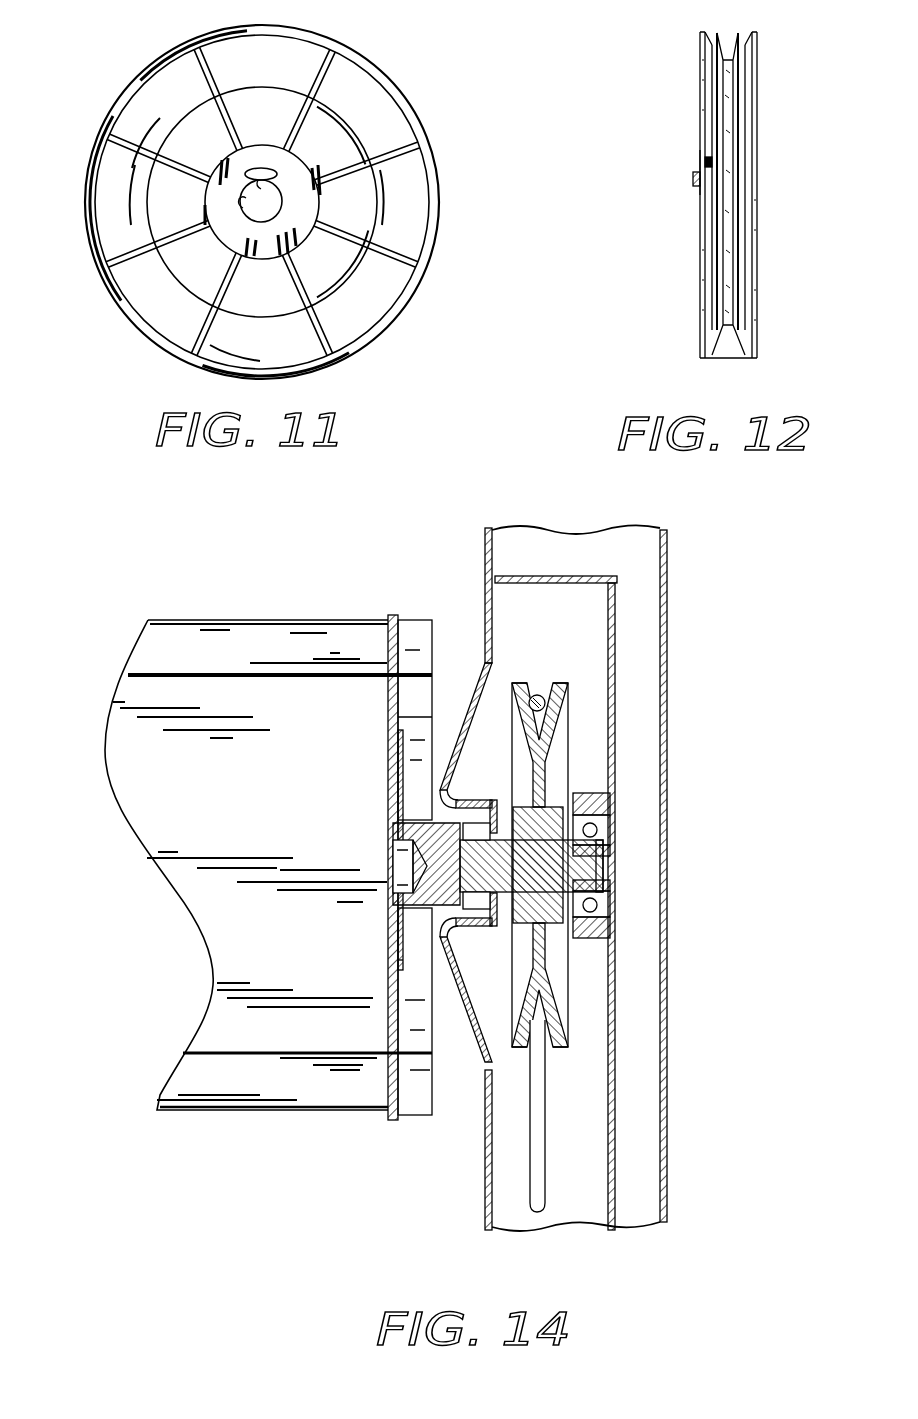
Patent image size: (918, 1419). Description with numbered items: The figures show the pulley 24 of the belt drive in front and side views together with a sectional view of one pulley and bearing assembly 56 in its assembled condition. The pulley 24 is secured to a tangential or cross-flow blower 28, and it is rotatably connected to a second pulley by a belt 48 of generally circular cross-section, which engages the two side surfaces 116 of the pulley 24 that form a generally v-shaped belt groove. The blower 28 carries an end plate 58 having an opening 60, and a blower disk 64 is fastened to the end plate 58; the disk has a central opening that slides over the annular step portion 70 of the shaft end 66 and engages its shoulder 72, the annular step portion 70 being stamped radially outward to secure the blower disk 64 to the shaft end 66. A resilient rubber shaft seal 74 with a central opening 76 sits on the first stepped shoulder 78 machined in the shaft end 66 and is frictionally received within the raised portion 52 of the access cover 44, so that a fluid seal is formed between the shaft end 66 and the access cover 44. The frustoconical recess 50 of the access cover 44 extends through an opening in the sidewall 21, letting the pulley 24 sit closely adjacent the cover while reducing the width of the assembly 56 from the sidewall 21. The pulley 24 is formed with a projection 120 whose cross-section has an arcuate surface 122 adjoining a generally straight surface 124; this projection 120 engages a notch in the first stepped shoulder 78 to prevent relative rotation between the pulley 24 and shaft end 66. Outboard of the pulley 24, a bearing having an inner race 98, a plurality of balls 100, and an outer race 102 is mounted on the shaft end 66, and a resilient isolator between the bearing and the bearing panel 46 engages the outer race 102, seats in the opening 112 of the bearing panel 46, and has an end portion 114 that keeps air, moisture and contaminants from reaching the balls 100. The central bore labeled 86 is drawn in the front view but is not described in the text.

In FIG. 14, the sidewall 21 is at (485, 548).
In FIG. 11, the pulley 24 is at (376, 64).
In FIG. 12, the pulley 24 is at (705, 112).
In FIG. 14, the pulley 24 is at (568, 738).
In FIG. 14, the tangential blower 28 is at (262, 640).
In FIG. 14, the access cover 44 is at (560, 578).
In FIG. 14, the bearing panel 46 is at (615, 682).
In FIG. 14, the belt 48 is at (537, 694).
In FIG. 14, the frustoconical shaped recess 50 is at (480, 722).
In FIG. 14, the raised portion 52 is at (468, 800).
In FIG. 14, the pulley and bearing assembly 56 is at (606, 524).
In FIG. 14, the end plate 58 is at (388, 712).
In FIG. 14, the opening 60 is at (396, 775).
In FIG. 14, the blower disk 64 is at (404, 992).
In FIG. 14, the shaft end 66 is at (433, 864).
In FIG. 14, the annular step portion 70 is at (393, 848).
In FIG. 14, the shoulder 72 is at (435, 866).
In FIG. 14, the shaft seal 74 is at (485, 845).
In FIG. 14, the central opening 76 is at (491, 891).
In FIG. 14, the first stepped shoulder 78 is at (470, 928).
In FIG. 11, the central bore 86 is at (244, 207).
In FIG. 14, the inner race 98 is at (603, 848).
In FIG. 14, the balls 100 is at (598, 830).
In FIG. 14, the outer race 102 is at (612, 806).
In FIG. 14, the opening 112 is at (612, 928).
In FIG. 12, the end portion 114 is at (724, 48).
In FIG. 14, the end portion 114 is at (604, 870).
In FIG. 12, the side surfaces 116 is at (712, 28).
In FIG. 11, the projection 120 is at (272, 172).
In FIG. 12, the projection 120 is at (692, 180).
In FIG. 14, the projection 120 is at (531, 866).
In FIG. 11, the arcuate surface 122 is at (258, 170).
In FIG. 11, the generally straight surface 124 is at (280, 200).
In FIG. 12, the generally straight surface 124 is at (697, 190).